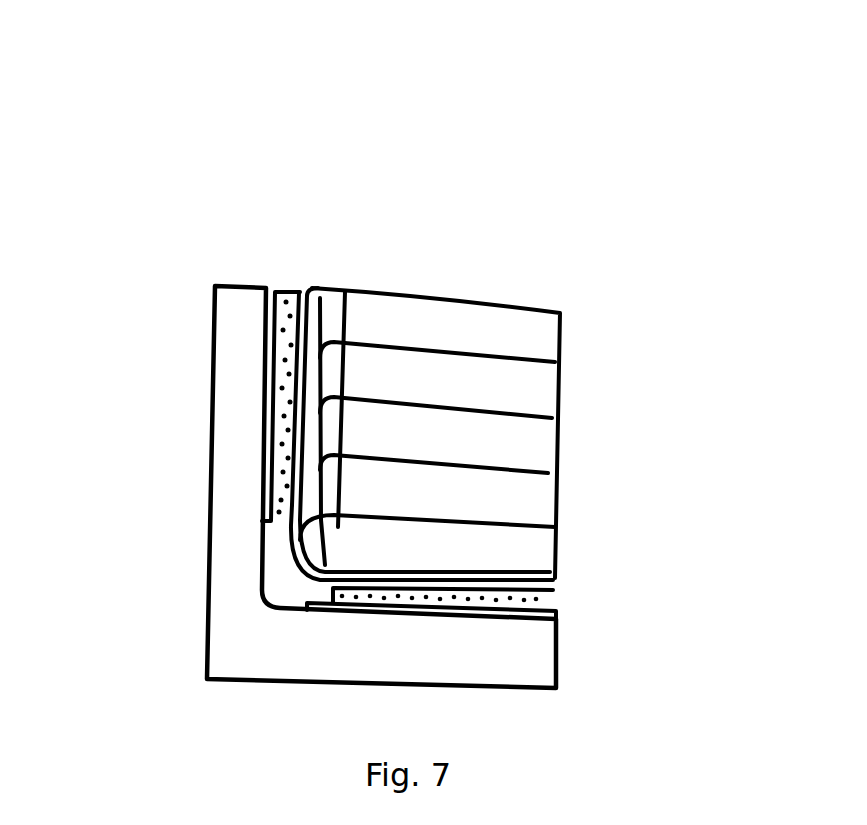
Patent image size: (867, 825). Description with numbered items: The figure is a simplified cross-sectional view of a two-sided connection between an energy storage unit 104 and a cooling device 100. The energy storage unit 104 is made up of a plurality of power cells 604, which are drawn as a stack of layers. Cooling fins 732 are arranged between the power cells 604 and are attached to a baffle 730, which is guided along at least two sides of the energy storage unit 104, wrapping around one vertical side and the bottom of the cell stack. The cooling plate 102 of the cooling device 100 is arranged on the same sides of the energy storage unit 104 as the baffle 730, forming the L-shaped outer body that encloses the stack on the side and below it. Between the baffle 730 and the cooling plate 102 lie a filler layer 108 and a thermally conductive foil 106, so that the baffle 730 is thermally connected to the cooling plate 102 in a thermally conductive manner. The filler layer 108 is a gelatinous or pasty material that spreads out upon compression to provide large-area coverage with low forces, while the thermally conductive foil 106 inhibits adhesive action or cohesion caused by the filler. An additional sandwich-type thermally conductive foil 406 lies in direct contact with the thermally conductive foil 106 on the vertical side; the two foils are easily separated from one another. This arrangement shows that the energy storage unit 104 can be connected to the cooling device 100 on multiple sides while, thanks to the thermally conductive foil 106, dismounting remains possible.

The cooling device 100 is at (176, 655).
The cooling plate 102 is at (547, 648).
The energy storage unit 104 is at (676, 33).
The thermally conductive foil 106 is at (268, 300).
The first filler layer 108 is at (540, 600).
The additional sandwich-type thermally conductive foil 406 is at (295, 300).
The power cells 604 is at (548, 320).
The baffle 730 is at (313, 287).
The cooling fins 732 is at (318, 460).